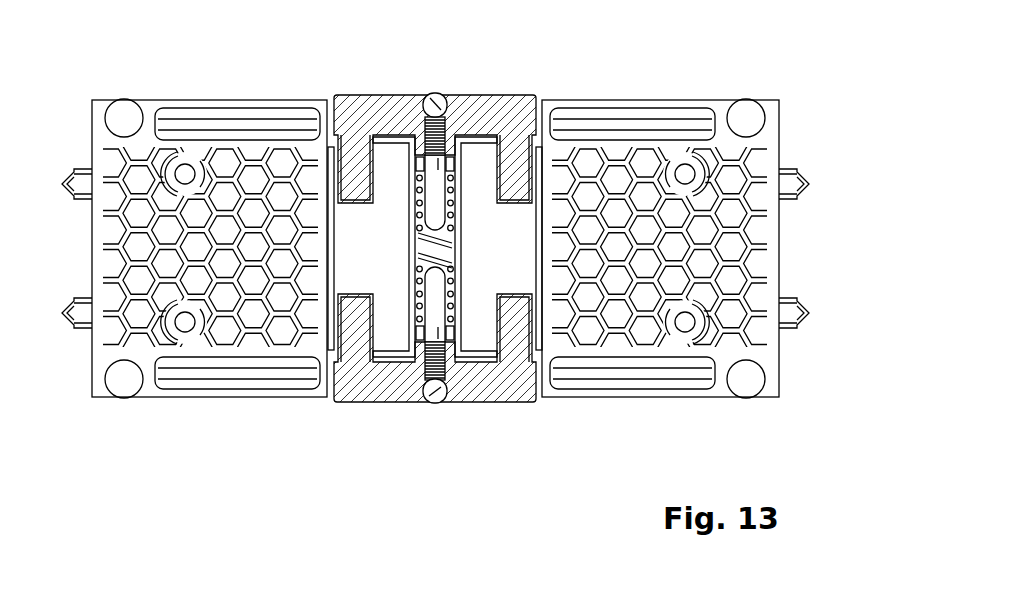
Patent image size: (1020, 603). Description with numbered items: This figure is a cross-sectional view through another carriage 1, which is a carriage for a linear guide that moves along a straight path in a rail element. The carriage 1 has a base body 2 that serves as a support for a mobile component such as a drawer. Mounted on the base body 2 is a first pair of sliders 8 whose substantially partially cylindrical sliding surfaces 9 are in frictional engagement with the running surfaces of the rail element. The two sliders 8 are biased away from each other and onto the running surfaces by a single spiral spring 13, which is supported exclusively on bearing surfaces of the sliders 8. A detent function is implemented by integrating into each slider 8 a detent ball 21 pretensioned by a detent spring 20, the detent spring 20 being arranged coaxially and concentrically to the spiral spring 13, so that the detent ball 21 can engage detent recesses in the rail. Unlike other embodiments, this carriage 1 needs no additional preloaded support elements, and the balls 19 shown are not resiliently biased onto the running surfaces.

The carriage 1 is at (288, 82).
The base body 2 is at (633, 178).
The slider 8 is at (532, 97).
The sliding surface 9 is at (486, 97).
The spiral spring 13 is at (453, 243).
The ball 19 is at (130, 100).
The detent spring 20 is at (420, 130).
The detent ball 21 is at (430, 98).